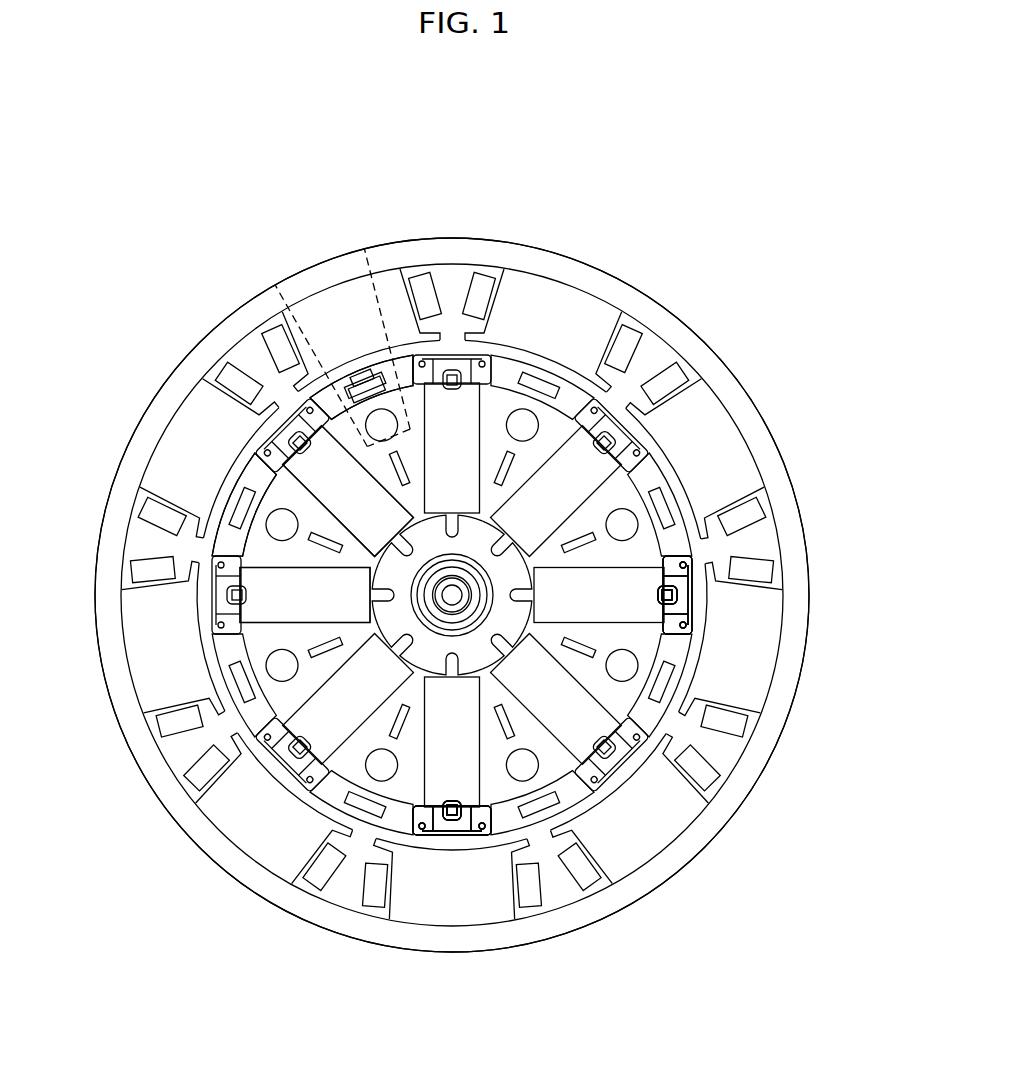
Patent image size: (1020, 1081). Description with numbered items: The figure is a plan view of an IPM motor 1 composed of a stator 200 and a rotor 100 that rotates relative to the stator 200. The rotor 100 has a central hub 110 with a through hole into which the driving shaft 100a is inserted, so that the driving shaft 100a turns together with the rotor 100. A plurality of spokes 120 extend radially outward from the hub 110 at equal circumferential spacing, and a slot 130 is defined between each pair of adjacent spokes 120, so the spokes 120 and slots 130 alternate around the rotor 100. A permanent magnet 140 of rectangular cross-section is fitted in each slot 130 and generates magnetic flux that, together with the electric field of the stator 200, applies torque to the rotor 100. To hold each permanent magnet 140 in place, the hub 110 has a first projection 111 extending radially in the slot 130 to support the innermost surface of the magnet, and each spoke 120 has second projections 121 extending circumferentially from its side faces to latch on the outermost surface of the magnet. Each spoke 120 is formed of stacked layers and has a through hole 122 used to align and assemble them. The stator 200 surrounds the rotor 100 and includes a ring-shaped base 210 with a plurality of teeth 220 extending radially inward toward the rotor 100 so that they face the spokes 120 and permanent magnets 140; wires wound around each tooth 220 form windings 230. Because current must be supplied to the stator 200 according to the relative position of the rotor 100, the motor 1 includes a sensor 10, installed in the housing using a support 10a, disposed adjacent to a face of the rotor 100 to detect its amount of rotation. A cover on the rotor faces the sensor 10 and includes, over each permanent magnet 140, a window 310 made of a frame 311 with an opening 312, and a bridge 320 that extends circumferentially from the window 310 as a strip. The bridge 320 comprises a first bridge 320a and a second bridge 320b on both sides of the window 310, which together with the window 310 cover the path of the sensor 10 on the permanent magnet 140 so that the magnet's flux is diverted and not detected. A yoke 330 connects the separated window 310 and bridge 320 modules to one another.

The IPM motor 1 is at (122, 331).
The sensor 10 is at (363, 470).
The support 10a is at (360, 370).
The rotor 100 is at (180, 634).
The driving shaft 100a is at (440, 824).
The hub 110 is at (413, 601).
The first projection 111 is at (427, 615).
The spoke 120 is at (592, 405).
The second projection 121 is at (417, 617).
The through hole 122 is at (282, 667).
The slot 130 is at (413, 372).
The permanent magnet 140 is at (328, 482).
The stator 200 is at (658, 290).
The base 210 is at (760, 437).
The tooth 220 is at (708, 443).
The winding 230 is at (735, 512).
The window 310 is at (667, 596).
The frame 311 is at (466, 820).
The opening 312 is at (452, 816).
The bridge 320 is at (893, 582).
The first bridge 320a is at (688, 565).
The second bridge 320b is at (688, 623).
The yoke 330 is at (571, 801).